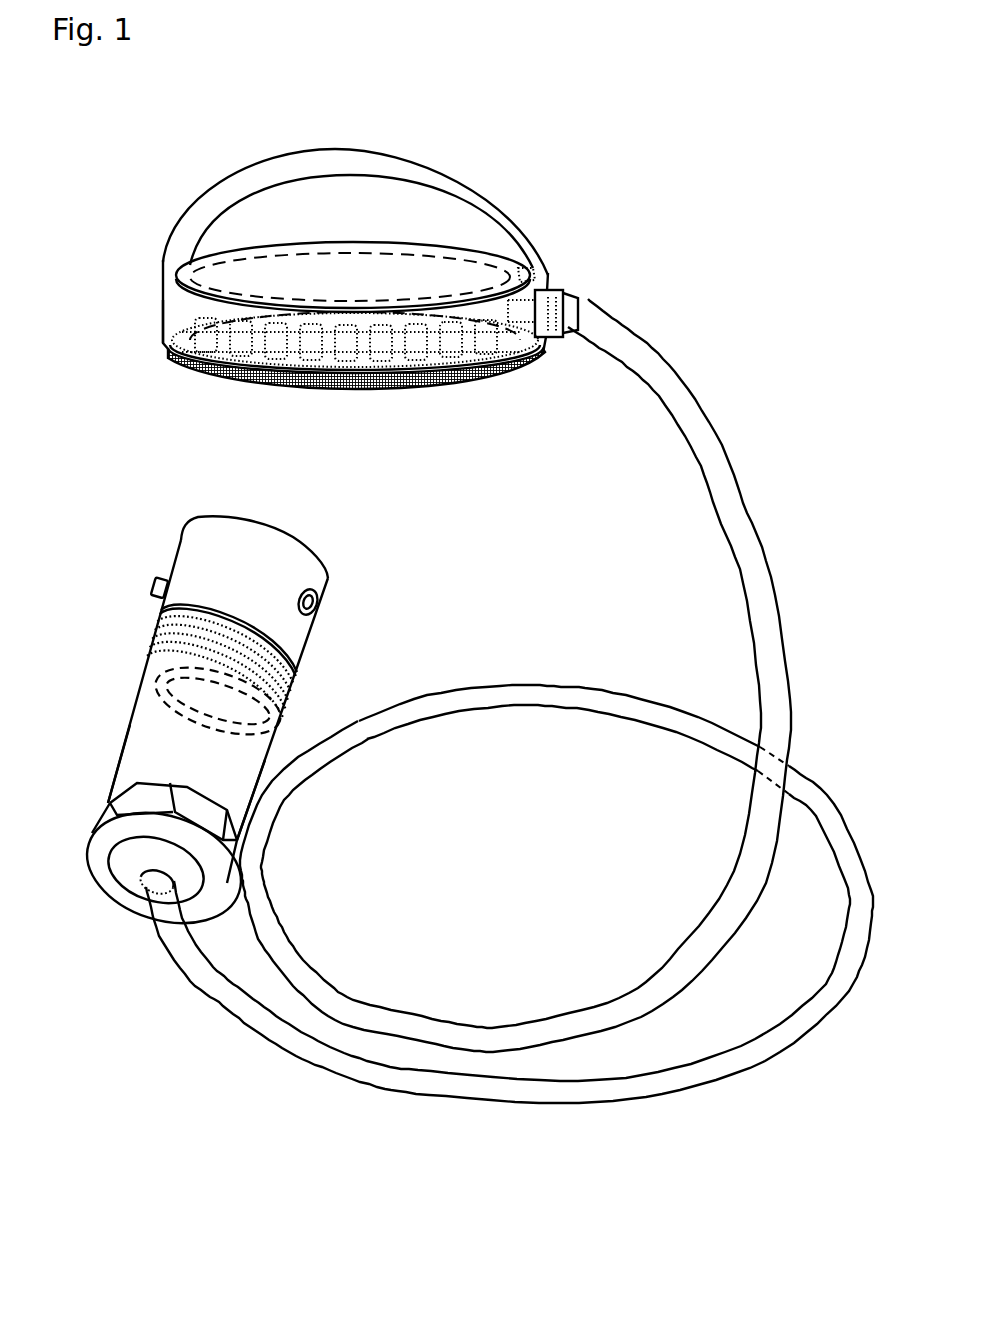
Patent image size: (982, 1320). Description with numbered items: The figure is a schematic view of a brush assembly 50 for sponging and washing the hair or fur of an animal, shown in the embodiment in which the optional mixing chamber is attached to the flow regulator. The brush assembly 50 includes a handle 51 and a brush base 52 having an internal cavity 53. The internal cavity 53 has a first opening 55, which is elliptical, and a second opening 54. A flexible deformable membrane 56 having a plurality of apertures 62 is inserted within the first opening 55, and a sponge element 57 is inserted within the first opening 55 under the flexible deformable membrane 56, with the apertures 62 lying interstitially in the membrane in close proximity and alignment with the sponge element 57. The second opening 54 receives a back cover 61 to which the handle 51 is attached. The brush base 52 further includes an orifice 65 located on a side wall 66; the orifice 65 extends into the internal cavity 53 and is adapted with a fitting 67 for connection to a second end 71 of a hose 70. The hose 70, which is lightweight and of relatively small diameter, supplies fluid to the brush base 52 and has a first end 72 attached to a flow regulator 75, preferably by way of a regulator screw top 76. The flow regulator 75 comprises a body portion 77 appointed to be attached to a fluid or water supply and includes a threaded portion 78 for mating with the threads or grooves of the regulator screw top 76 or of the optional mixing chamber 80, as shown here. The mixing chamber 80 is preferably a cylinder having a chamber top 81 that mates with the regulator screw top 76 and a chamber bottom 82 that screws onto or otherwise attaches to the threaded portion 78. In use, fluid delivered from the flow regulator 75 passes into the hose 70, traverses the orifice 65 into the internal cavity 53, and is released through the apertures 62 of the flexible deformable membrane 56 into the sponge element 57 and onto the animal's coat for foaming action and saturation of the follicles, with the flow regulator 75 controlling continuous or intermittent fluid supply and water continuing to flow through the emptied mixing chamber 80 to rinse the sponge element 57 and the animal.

The brush assembly 50 is at (419, 304).
The handle 51 is at (423, 165).
The brush base 52 is at (289, 245).
The internal cavity 53 is at (182, 307).
The second opening 54 is at (214, 274).
The first opening 55 is at (170, 348).
The flexible deformable membrane 56 is at (438, 348).
The sponge element 57 is at (258, 383).
The back cover 61 is at (481, 260).
The apertures 62 is at (176, 325).
The orifice 65 is at (545, 292).
The side wall 66 is at (532, 372).
The fitting 67 is at (578, 300).
The hose 70 is at (749, 611).
The second end 71 is at (563, 293).
The first end 72 is at (164, 868).
The flow regulator 75 is at (233, 758).
The regulator screw top 76 is at (113, 774).
The body portion 77 is at (307, 602).
The threaded portion 78 is at (228, 640).
The mixing chamber 80 is at (218, 700).
The chamber top 81 is at (186, 782).
The chamber bottom 82 is at (220, 667).